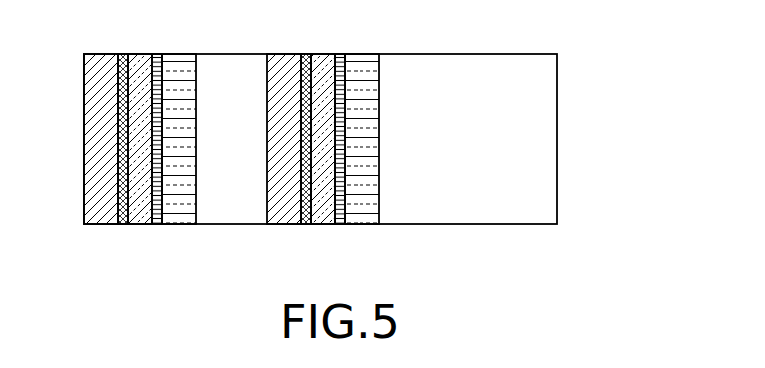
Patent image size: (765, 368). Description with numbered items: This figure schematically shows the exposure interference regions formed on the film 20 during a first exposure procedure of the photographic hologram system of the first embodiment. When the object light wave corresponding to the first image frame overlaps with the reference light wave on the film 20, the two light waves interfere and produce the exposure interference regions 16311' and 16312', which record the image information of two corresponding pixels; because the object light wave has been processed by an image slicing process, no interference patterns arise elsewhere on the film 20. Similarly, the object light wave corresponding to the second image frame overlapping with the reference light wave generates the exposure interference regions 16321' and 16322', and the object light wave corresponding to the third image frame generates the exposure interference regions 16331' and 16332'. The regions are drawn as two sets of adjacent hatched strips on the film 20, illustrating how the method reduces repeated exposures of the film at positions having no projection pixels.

The film 20 is at (557, 137).
The exposure interference region 16311' is at (97, 121).
The exposure interference region 16321' is at (143, 161).
The exposure interference region 16331' is at (188, 121).
The exposure interference region 16312' is at (280, 121).
The exposure interference region 16322' is at (324, 162).
The exposure interference region 16332' is at (371, 121).